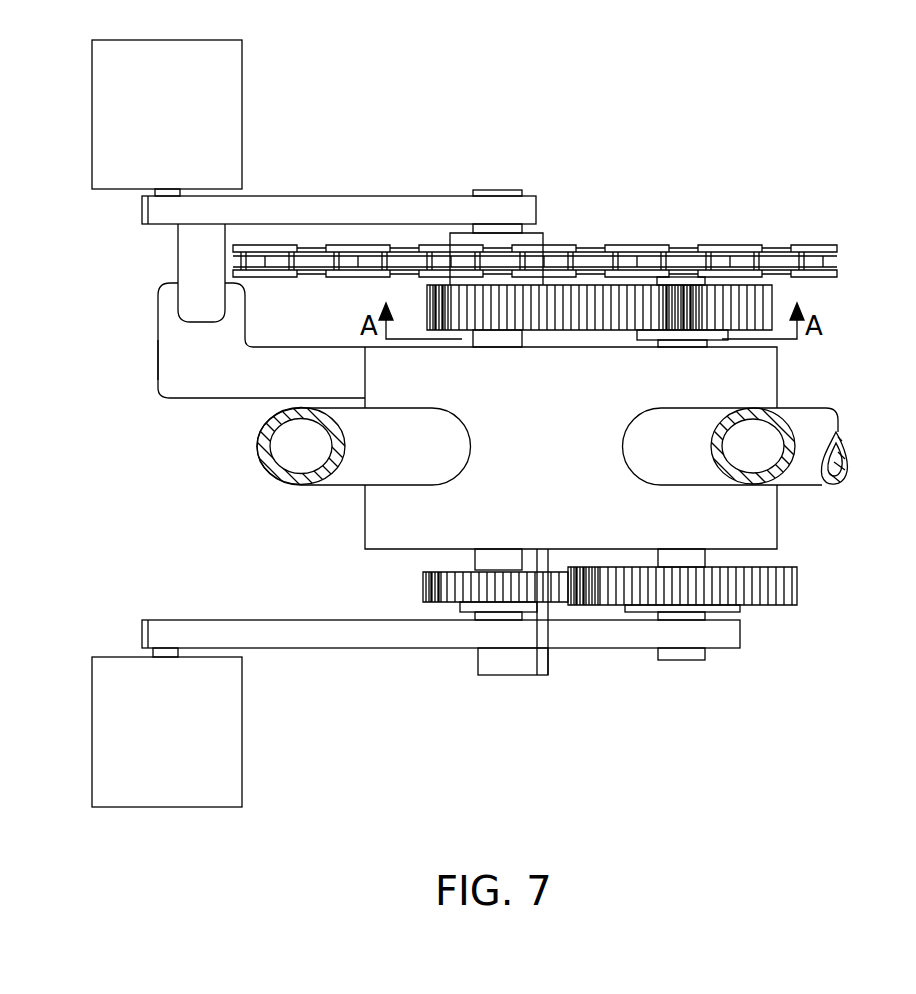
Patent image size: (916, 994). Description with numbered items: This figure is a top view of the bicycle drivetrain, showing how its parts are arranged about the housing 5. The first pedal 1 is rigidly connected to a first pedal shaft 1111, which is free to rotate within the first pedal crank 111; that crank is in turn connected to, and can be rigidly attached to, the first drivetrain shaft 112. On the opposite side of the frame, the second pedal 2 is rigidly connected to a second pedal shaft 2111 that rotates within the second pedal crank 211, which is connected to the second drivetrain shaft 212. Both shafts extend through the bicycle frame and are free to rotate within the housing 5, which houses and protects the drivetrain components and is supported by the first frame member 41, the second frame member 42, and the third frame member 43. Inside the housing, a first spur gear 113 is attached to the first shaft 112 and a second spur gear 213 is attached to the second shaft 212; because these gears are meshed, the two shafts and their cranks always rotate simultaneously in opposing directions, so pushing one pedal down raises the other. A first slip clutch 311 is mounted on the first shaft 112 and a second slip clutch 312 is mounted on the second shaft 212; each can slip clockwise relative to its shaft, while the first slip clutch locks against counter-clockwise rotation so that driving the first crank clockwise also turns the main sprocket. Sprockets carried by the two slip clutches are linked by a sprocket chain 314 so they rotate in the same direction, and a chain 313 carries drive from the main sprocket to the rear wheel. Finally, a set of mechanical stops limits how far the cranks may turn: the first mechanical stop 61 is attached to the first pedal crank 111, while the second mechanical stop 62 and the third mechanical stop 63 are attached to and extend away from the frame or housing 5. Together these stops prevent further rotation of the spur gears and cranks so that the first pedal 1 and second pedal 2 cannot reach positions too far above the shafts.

The first pedal 1 is at (218, 118).
The first pedal crank 111 is at (345, 207).
The first pedal shaft 1111 is at (170, 192).
The first drivetrain shaft 112 is at (504, 190).
The first spur gear 113 is at (458, 593).
The second pedal 2 is at (207, 750).
The second pedal crank 211 is at (342, 640).
The second pedal shaft 2111 is at (165, 650).
The second drivetrain shaft 212 is at (686, 282).
The second spur gear 213 is at (748, 600).
The first slip clutch 311 is at (532, 240).
The second slip clutch 312 is at (738, 290).
The chain 313 is at (557, 260).
The sprocket chain 314 is at (447, 305).
The first frame member 41 is at (355, 470).
The second frame member 42 is at (688, 420).
The third frame member 43 is at (805, 473).
The housing 5 is at (392, 525).
The first mechanical stop 61 is at (187, 268).
The second mechanical stop 62 is at (173, 362).
The third mechanical stop 63 is at (512, 662).